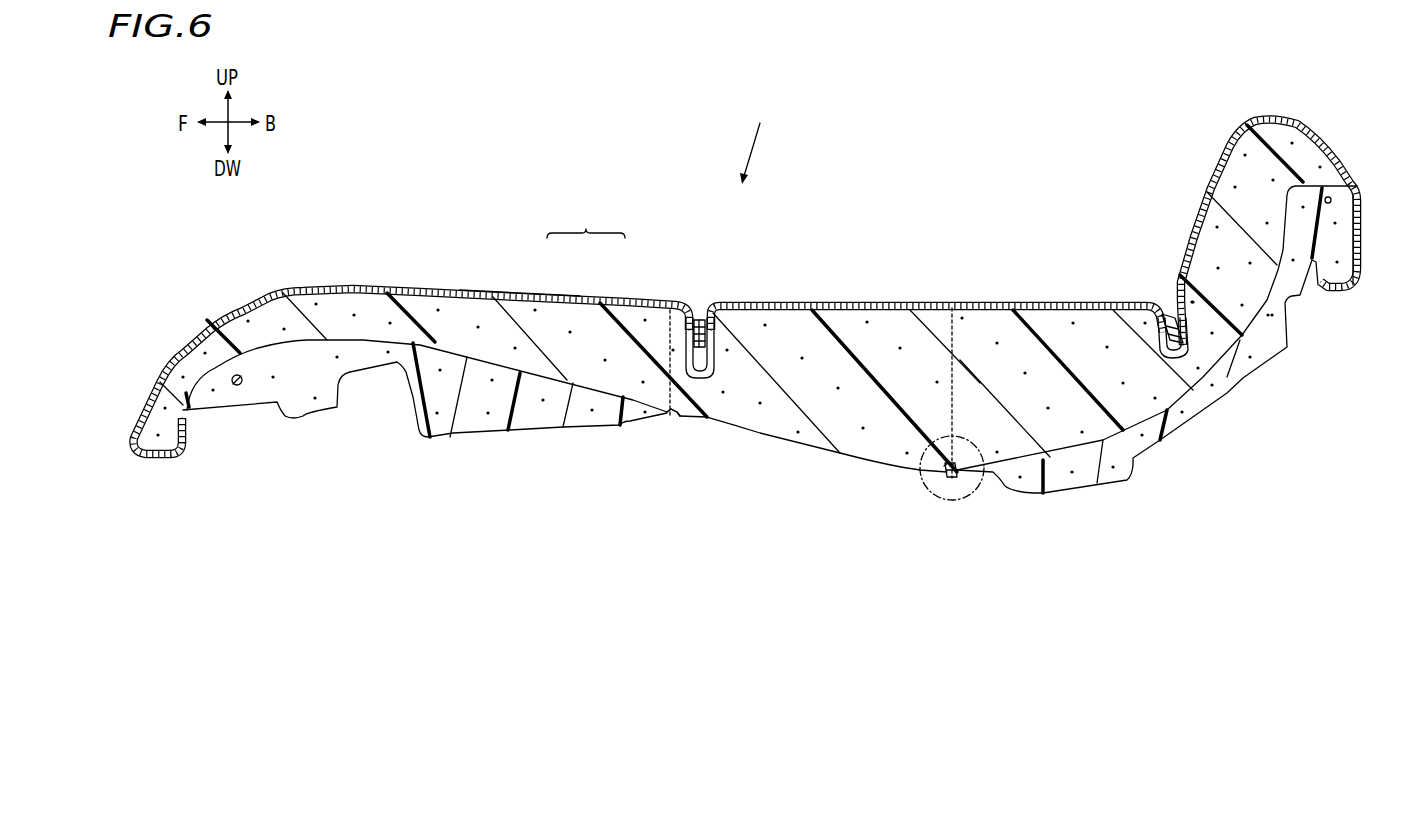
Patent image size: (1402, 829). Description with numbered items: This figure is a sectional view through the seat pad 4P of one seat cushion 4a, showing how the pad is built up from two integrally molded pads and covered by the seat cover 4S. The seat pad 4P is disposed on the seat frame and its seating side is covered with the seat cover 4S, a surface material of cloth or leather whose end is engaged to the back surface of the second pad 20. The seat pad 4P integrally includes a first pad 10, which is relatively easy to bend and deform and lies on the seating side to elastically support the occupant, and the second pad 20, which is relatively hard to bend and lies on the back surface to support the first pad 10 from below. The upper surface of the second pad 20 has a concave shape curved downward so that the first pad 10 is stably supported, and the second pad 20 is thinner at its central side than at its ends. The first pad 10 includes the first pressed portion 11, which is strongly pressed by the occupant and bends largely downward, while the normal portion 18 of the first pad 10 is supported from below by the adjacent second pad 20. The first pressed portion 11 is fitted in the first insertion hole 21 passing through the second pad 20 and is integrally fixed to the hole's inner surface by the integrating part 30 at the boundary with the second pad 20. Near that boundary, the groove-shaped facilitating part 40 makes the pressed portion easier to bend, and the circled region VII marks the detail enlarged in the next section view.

The normal portion 18 is at (460, 314).
The seat cover 4S is at (518, 290).
The seat pad 4P is at (586, 219).
The first pad 10 is at (557, 327).
The second pad 20 is at (587, 400).
The first pressed portion 11 is at (852, 328).
The first insertion hole 21 is at (668, 418).
The integrating part 30 is at (680, 418).
The facilitating part 40 is at (945, 466).
The seat cushion 4a is at (775, 140).
The section line VII is at (967, 500).